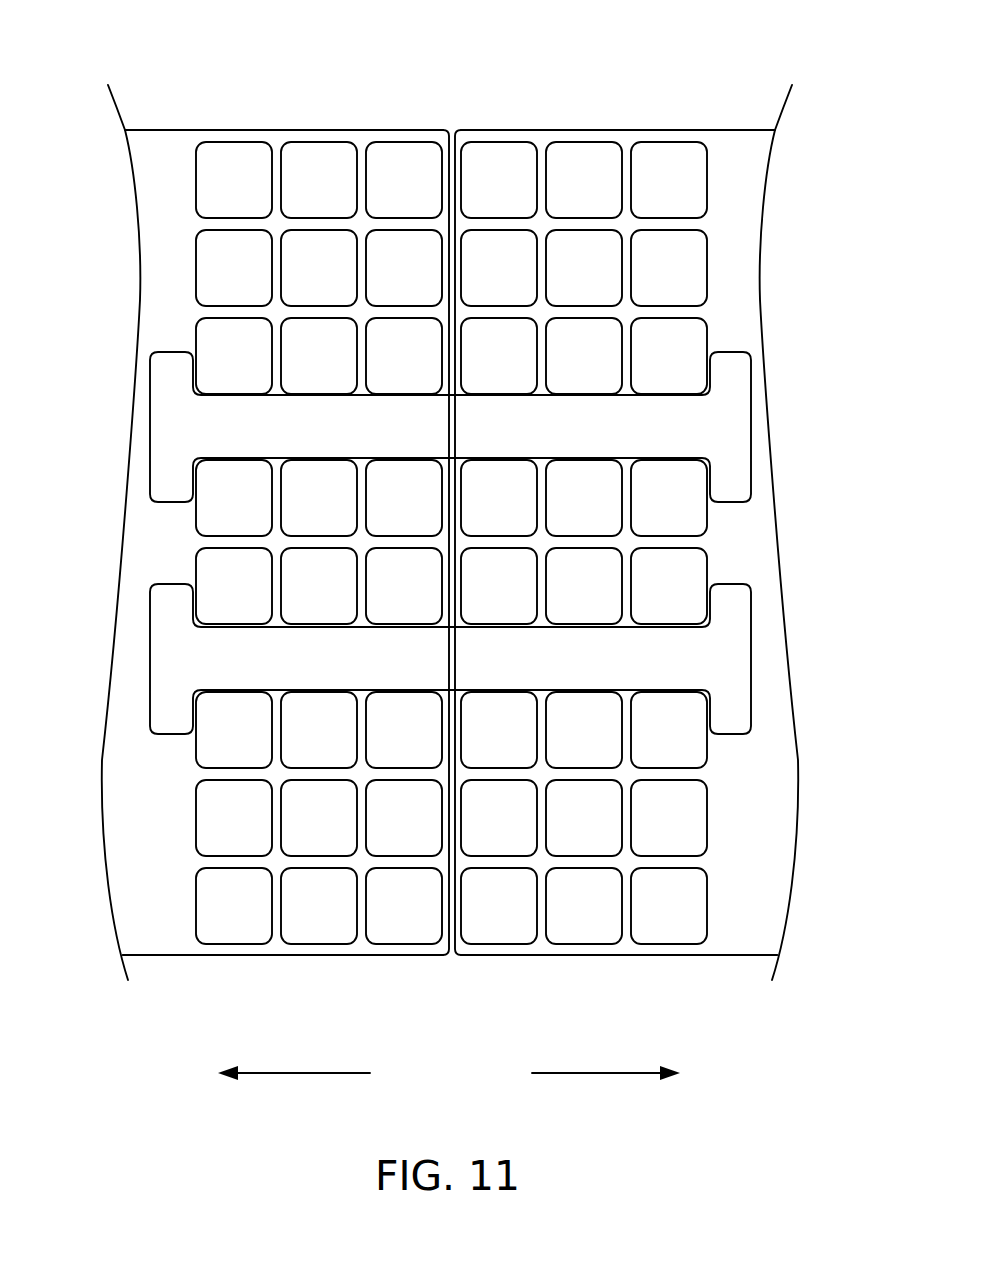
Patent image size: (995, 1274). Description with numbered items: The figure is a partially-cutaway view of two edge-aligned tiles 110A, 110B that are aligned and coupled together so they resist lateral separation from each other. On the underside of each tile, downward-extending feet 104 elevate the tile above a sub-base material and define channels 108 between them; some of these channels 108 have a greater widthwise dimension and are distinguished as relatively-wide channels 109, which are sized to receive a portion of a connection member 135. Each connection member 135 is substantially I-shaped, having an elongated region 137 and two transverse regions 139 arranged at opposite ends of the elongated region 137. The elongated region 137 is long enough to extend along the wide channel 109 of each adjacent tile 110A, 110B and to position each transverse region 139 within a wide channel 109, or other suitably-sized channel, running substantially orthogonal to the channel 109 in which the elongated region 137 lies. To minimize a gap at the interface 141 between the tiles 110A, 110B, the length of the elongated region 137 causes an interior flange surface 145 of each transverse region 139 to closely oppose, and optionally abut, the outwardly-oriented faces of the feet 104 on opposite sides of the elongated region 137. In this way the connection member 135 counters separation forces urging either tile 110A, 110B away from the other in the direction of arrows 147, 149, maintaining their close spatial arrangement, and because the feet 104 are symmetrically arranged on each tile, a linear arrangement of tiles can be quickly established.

The tile 110A is at (186, 115).
The tile 110B is at (634, 112).
The channel 108 is at (277, 143).
The downward-extending foot 104 is at (211, 511).
The connection member 135 is at (133, 388).
The elongated region 137 is at (326, 437).
The transverse region 139 is at (165, 478).
The interior flange surface 145 is at (193, 368).
The arrow 147 is at (192, 343).
The arrow 149 is at (613, 1073).
The interface 141 is at (448, 960).
The relatively-wide channel 109 is at (158, 935).